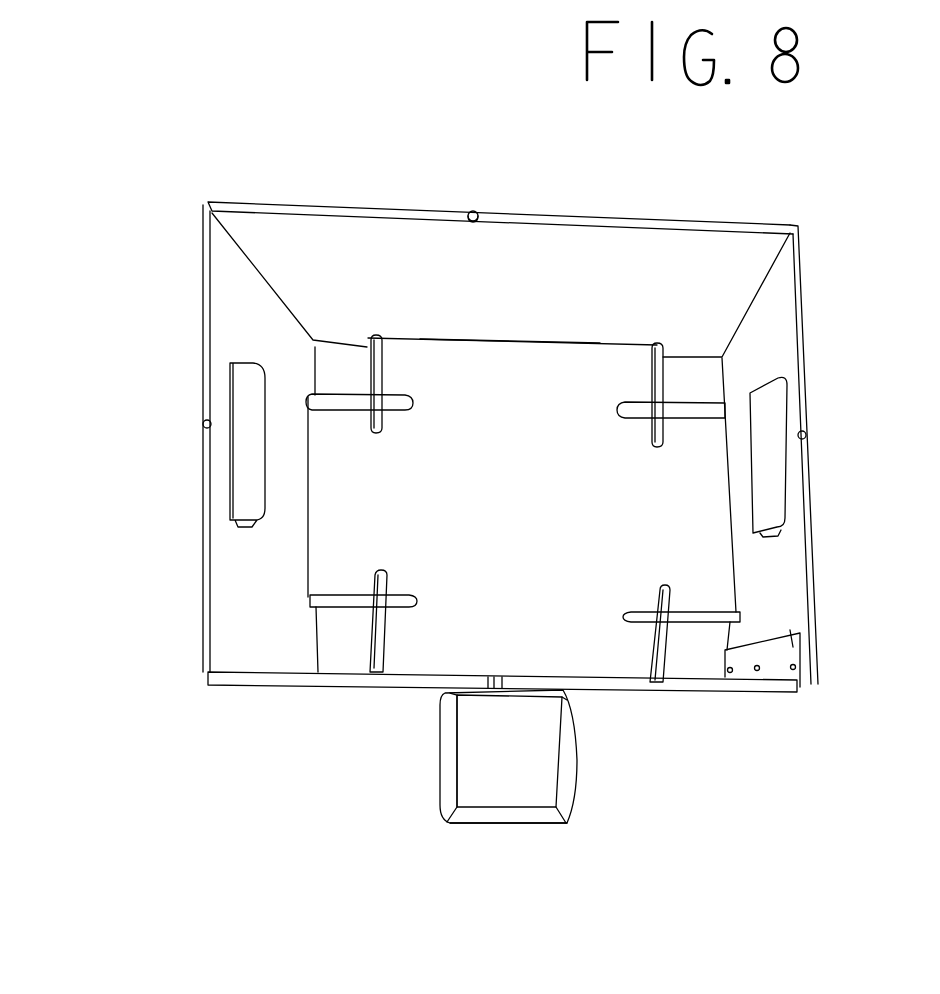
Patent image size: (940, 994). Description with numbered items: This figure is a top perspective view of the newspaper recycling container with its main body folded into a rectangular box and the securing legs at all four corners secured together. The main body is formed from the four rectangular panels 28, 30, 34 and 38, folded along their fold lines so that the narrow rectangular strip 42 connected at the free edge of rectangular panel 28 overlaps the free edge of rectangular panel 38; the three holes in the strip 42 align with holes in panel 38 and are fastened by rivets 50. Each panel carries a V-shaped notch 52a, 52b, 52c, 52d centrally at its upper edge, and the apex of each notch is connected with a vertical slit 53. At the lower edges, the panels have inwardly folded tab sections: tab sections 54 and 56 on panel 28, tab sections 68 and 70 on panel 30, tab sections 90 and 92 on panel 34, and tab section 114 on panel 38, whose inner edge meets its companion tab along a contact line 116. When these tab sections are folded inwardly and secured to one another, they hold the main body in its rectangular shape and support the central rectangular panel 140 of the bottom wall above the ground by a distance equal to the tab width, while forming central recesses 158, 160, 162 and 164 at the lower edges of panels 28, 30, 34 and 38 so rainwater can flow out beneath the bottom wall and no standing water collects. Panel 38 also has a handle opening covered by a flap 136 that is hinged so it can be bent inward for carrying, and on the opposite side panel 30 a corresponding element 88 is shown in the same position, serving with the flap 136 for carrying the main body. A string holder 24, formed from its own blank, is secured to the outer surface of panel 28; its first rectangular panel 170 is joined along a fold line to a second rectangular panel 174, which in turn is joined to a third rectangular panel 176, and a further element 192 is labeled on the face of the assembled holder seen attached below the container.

The string holder 24 is at (433, 767).
The rectangular panel 28 is at (263, 687).
The rectangular panel 30 is at (223, 297).
The rectangular panel 34 is at (315, 227).
The rectangular panel 38 is at (785, 318).
The narrow rectangular strip 42 is at (800, 633).
The rivets 50 is at (797, 658).
The V-shaped notch 52a is at (492, 678).
The V-shaped notch 52b is at (203, 423).
The V-shaped notch 52c is at (470, 210).
The V-shaped notch 52d is at (810, 432).
The vertical slit 53 is at (468, 232).
The tab section 54 is at (387, 638).
The tab section 56 is at (663, 588).
The tab section 68 is at (342, 417).
The tab section 70 is at (345, 593).
The left resilient pad 88 is at (243, 402).
The tab section 90 is at (650, 377).
The tab section 92 is at (382, 373).
The tab section 114 is at (628, 422).
The contact line 116 is at (698, 612).
The flap 136 is at (768, 420).
The central rectangular panel 140 is at (484, 512).
The central recess 158 is at (597, 675).
The central recess 160 is at (312, 490).
The central recess 162 is at (497, 347).
The central recess 164 is at (727, 532).
The first rectangular panel 170 is at (438, 725).
The second rectangular panel 174 is at (497, 826).
The third rectangular panel 176 is at (575, 793).
The module front face 192 is at (538, 752).